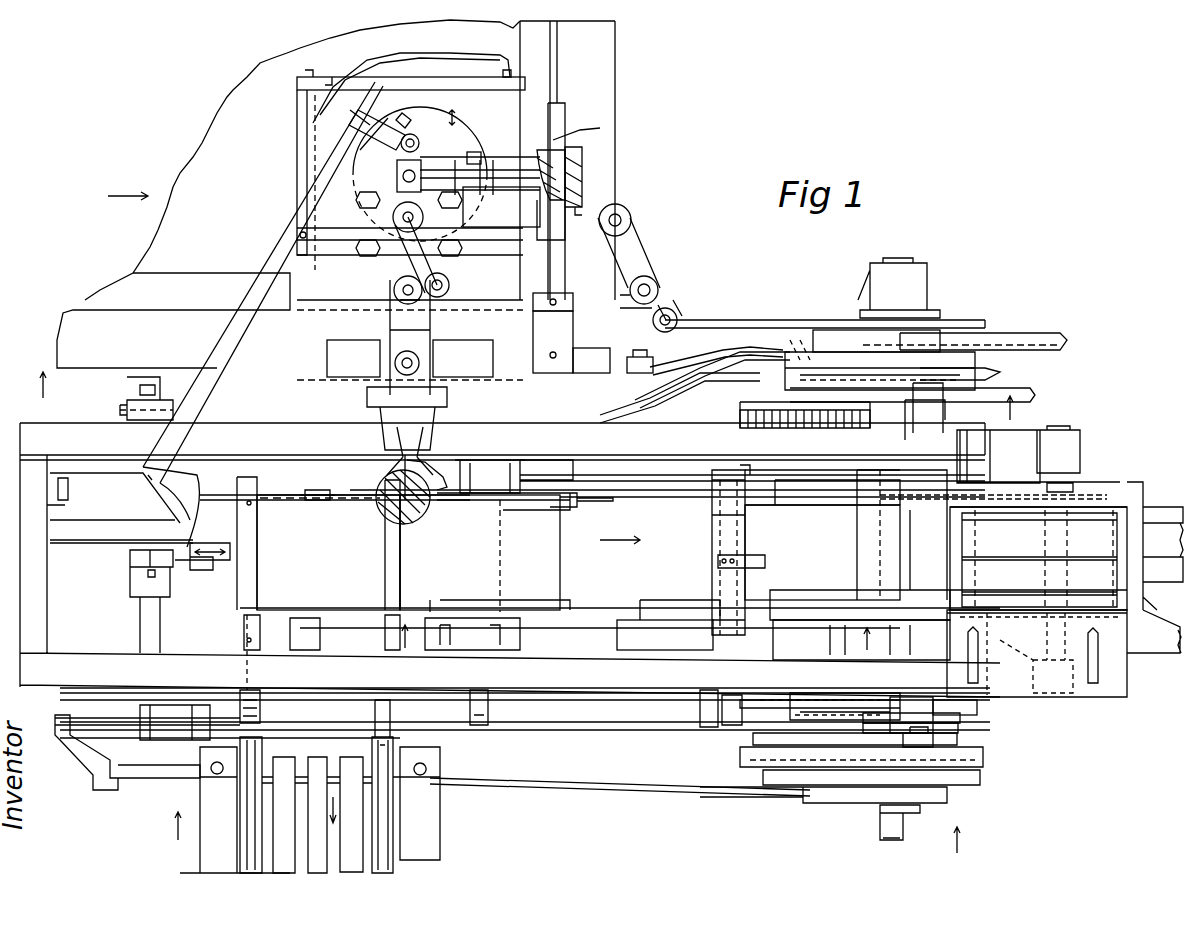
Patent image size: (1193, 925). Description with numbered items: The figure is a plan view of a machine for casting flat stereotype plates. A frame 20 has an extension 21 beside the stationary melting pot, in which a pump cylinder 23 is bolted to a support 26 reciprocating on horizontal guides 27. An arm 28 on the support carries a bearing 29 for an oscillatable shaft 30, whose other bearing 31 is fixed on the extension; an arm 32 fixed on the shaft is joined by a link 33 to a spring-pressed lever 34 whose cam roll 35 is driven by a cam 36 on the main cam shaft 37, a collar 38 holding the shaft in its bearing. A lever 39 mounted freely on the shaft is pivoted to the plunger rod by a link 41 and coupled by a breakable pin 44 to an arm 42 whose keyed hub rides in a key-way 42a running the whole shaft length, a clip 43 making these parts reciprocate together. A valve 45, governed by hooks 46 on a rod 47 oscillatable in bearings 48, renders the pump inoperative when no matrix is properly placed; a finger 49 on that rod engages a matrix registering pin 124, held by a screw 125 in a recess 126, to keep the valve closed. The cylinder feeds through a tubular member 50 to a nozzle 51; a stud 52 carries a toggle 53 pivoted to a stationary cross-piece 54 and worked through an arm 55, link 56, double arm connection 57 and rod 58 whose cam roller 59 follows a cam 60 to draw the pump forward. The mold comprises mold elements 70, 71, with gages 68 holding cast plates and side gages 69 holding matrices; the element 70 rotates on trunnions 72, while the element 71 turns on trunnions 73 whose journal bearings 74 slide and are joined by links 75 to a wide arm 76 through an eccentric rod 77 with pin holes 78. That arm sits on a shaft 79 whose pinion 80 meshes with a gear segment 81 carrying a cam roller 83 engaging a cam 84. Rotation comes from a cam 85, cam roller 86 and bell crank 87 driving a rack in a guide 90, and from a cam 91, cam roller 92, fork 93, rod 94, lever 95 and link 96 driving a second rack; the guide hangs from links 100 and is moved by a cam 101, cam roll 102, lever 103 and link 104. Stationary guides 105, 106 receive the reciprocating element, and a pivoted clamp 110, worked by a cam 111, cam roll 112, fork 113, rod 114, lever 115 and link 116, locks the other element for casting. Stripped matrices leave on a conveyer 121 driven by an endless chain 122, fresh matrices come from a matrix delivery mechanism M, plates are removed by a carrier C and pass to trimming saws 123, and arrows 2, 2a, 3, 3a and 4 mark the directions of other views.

The frame 20 is at (63, 657).
The extension 21 is at (520, 95).
The pump cylinder 23 is at (430, 118).
The support 26 is at (422, 337).
The horizontal guides 27 is at (482, 332).
The arm 28 is at (508, 205).
The bearing 29 is at (563, 238).
The oscillatable shaft 30 is at (560, 128).
The bearing 31 is at (570, 333).
The arm 32 is at (580, 372).
The link 33 is at (655, 360).
The spring-pressed lever 34 is at (705, 385).
The cam roll 35 is at (925, 416).
The cam 36 is at (1035, 395).
The main cam shaft 37 is at (902, 555).
The collar 38 is at (570, 297).
The lever 39 is at (565, 158).
The link 41 is at (418, 167).
The arm 42 is at (500, 157).
The key-way 42a is at (580, 130).
The clip 43 is at (582, 170).
The pin 44 is at (465, 137).
The valve 45 is at (420, 143).
The hooks 46 is at (413, 122).
The rod 47 is at (262, 322).
The bearings 48 is at (378, 130).
The finger 49 is at (200, 478).
The tubular member 50 is at (385, 320).
The nozzle 51 is at (430, 480).
The stud 52 is at (418, 362).
The toggle 53 is at (390, 293).
The stationary cross-piece 54 is at (297, 237).
The arm 55 is at (395, 268).
The link 56 is at (633, 314).
The lever or double arm connection 57 is at (652, 268).
The rod 58 is at (740, 320).
The cam roller 59 is at (840, 310).
The cam 60 is at (1040, 340).
The gages 68 is at (257, 570).
The side gages 69 is at (498, 505).
The mold element 70 is at (328, 552).
The mold element 71 is at (480, 552).
The trunnions 72 is at (305, 475).
The trunnions 73 is at (488, 465).
The journal bearings 74 is at (522, 462).
The links 75 is at (660, 478).
The wide arm 76 is at (775, 545).
The eccentric rod 77 is at (718, 565).
The pin holes 78 is at (740, 560).
The shaft 79 is at (830, 645).
The gear or pinion 80 is at (865, 428).
The gear segment 81 is at (740, 420).
The cam roller 83 is at (810, 330).
The cam 84 is at (785, 382).
The cam 85 is at (985, 757).
The cam roller 86 is at (933, 752).
The bell crank 87 is at (753, 738).
The guide 90 is at (615, 735).
The cam 91 is at (982, 778).
The cam roller 92 is at (838, 790).
The fork 93 is at (803, 797).
The rod 94 is at (620, 798).
The lever 95 is at (88, 748).
The link 96 is at (118, 718).
The links 100 is at (262, 700).
The cam 101 is at (978, 708).
The cam roll 102 is at (962, 718).
The lever 103 is at (958, 730).
The link 104 is at (765, 700).
The stationary guide 105 is at (665, 652).
The stationary guide 106 is at (415, 650).
The pivoted clamp 110 is at (228, 575).
The cam 111 is at (985, 372).
The cam roll 112 is at (716, 353).
The fork 113 is at (787, 346).
The rod 114 is at (630, 395).
The lever 115 is at (127, 383).
The link 116 is at (190, 570).
The conveyer 121 is at (665, 635).
The endless chain 122 is at (1015, 478).
The trimming saws 123 is at (380, 713).
The matrix registering pins 124 is at (225, 495).
The screw 125 is at (322, 490).
The recess 126 is at (315, 500).
The matrix delivery mechanism M is at (1130, 513).
The carrier C is at (340, 805).
The section line 2 is at (560, 832).
The section line 2a is at (587, 634).
The section line 3 is at (530, 510).
The nozzle 3a is at (410, 463).
The section line 4 is at (128, 190).